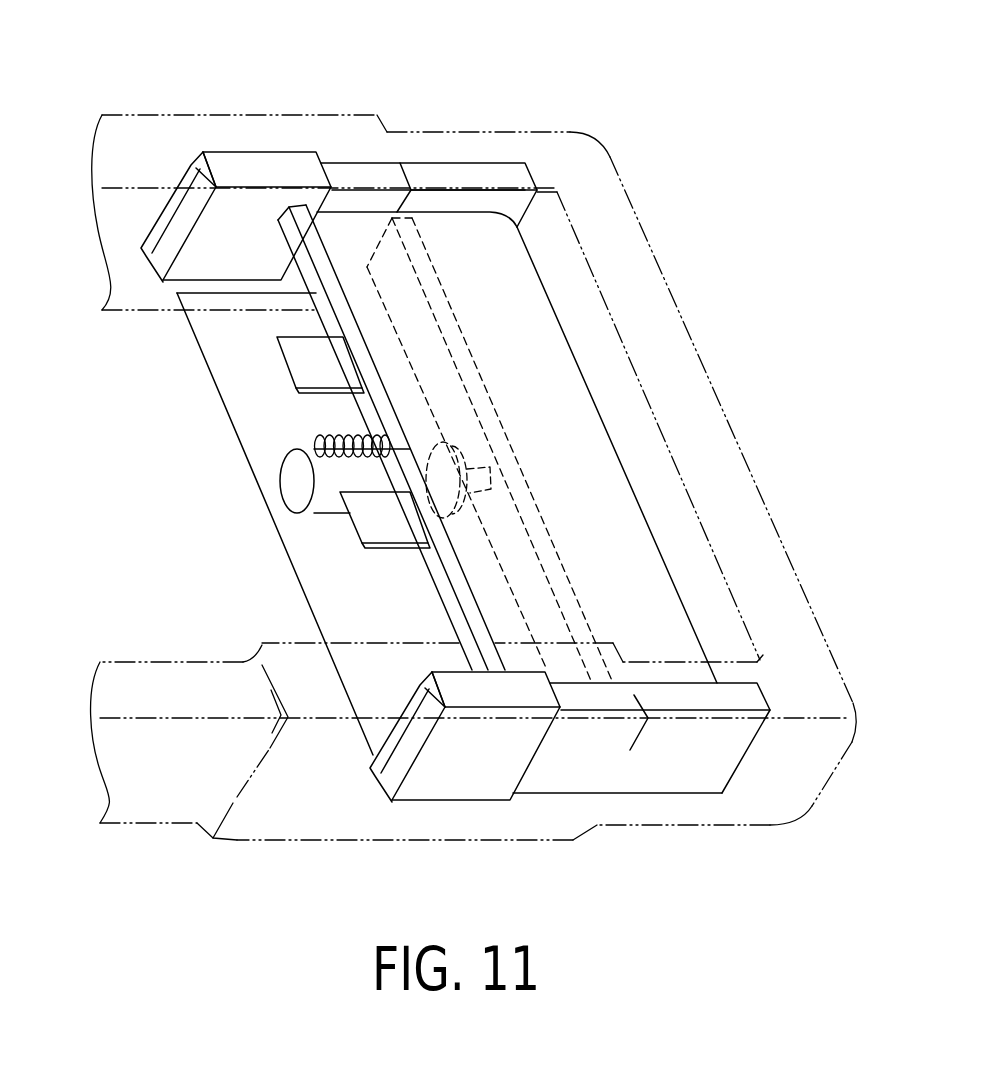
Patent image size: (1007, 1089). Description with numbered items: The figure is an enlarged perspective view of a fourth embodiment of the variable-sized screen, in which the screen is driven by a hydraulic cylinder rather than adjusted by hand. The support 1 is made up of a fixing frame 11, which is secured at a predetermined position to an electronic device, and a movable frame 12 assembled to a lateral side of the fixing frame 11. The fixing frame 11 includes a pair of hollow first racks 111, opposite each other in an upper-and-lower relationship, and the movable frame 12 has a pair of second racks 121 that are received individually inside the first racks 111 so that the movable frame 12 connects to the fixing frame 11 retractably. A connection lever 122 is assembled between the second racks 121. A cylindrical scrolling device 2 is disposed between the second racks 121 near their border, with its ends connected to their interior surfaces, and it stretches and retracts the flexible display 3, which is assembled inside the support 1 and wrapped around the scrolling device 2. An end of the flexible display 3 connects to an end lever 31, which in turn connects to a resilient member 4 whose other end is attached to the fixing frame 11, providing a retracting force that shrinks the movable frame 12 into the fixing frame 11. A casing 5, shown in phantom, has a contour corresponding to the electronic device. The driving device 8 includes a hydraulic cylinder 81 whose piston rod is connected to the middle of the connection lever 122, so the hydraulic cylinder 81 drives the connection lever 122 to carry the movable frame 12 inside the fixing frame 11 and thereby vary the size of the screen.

The support 1 is at (451, 345).
The fixing frame 11 is at (224, 155).
The first racks 111 is at (212, 152).
The movable frame 12 is at (551, 356).
The second racks 121 is at (487, 180).
The connection lever 122 is at (453, 342).
The scrolling device 2 is at (606, 464).
The flexible display 3 is at (299, 480).
The end lever 31 is at (360, 278).
The resilient member 4 is at (308, 435).
The casing 5 is at (625, 152).
The driving device 8 is at (348, 540).
The hydraulic cylinder 81 is at (297, 497).